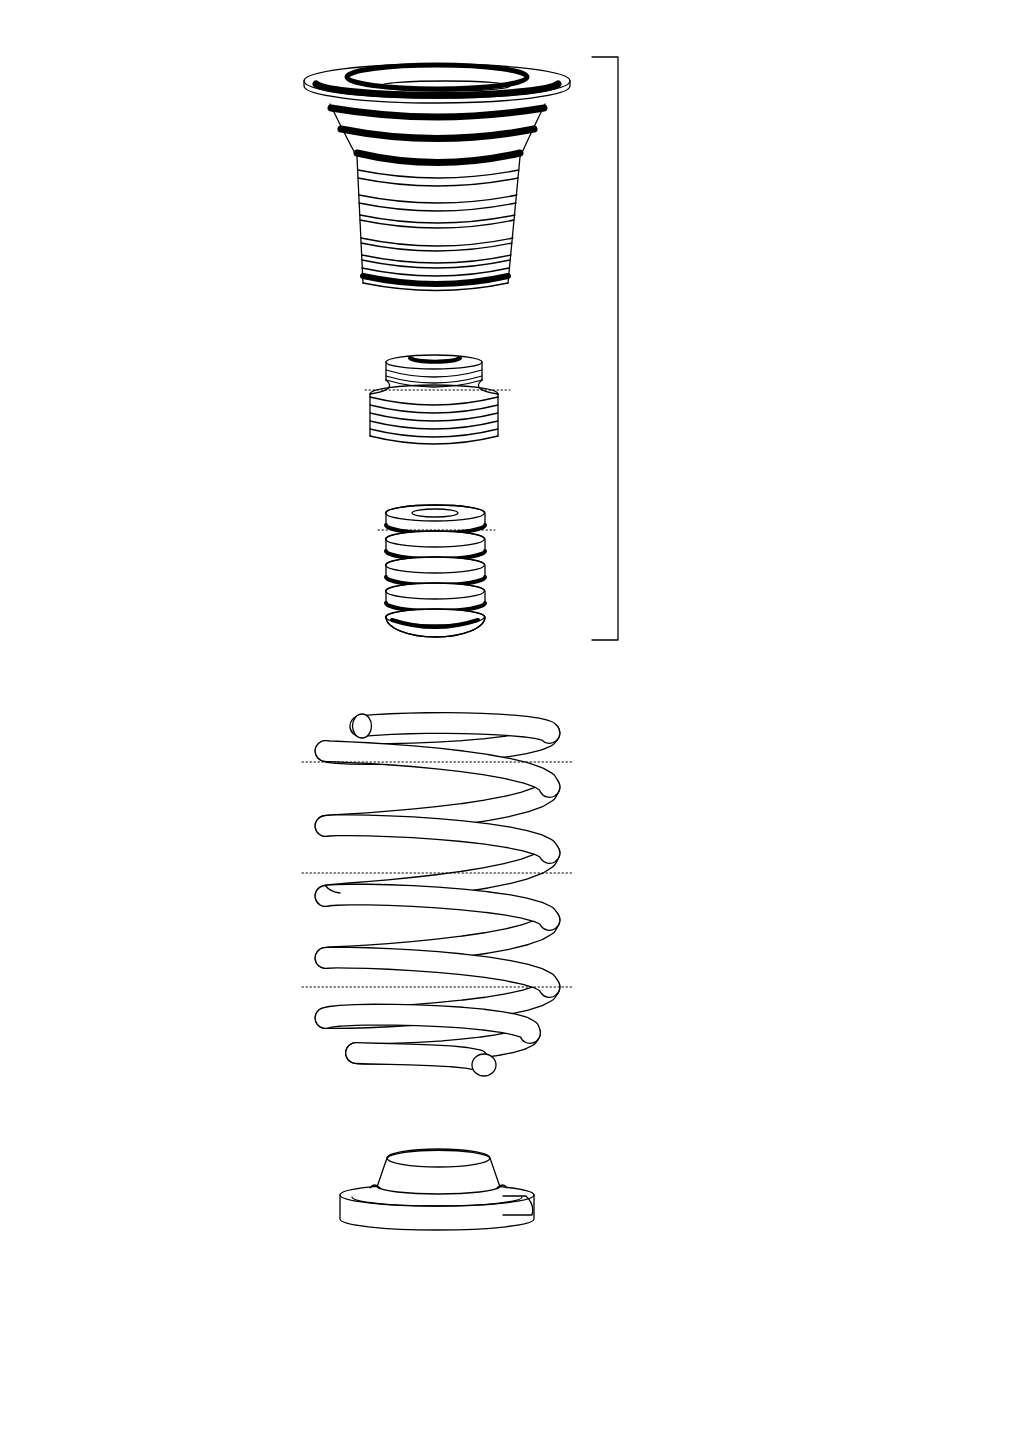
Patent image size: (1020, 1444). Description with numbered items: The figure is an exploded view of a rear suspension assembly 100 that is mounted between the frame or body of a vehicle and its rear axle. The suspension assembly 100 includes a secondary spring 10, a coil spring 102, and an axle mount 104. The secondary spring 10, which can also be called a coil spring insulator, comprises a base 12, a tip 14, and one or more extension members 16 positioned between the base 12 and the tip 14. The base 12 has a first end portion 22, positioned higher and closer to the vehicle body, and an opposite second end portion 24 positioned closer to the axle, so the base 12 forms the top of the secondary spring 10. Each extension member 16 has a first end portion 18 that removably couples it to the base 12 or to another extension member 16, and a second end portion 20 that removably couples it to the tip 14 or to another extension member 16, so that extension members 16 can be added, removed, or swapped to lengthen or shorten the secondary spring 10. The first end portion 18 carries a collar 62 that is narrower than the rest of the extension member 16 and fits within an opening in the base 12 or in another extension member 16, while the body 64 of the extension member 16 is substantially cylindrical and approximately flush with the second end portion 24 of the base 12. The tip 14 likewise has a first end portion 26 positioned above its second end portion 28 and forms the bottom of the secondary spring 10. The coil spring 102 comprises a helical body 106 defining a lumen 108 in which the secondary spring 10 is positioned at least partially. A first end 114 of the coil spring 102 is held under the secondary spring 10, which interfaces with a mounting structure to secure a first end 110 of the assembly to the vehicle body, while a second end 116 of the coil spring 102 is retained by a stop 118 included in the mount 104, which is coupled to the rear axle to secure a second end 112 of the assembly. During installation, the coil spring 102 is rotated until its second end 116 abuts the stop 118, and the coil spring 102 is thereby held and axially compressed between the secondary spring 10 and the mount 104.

The suspension assembly 100 is at (678, 95).
The secondary spring 10 is at (618, 330).
The first end of the suspension assembly 110 is at (441, 45).
The base 12 is at (356, 157).
The first end portion 22 is at (305, 83).
The second end portion 24 is at (381, 270).
The extension member 16 is at (373, 402).
The first end portion 18 is at (395, 371).
The collar 62 is at (465, 372).
The body 64 is at (490, 415).
The second end portion 20 is at (387, 435).
The tip 14 is at (397, 567).
The first end portion 26 is at (400, 515).
The second end portion 28 is at (400, 627).
The lumen 108 is at (458, 722).
The coil spring 102 is at (548, 865).
The first end of the coil spring 114 is at (353, 729).
The helical body 106 is at (333, 886).
The second end of the coil spring 116 is at (472, 1077).
The second end of the suspension assembly 112 is at (432, 1266).
The axle mount 104 is at (503, 1183).
The stop 118 is at (530, 1205).